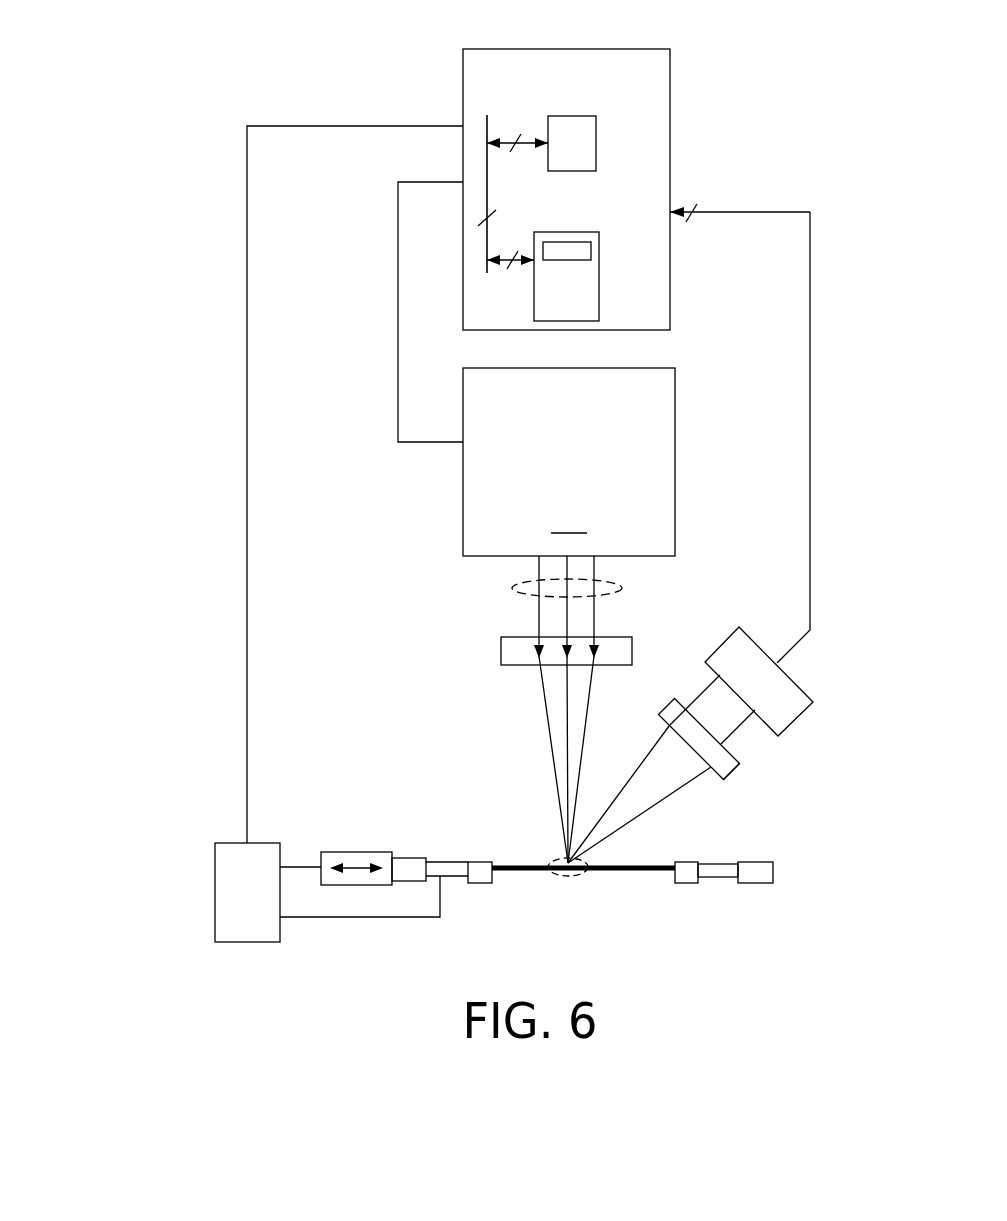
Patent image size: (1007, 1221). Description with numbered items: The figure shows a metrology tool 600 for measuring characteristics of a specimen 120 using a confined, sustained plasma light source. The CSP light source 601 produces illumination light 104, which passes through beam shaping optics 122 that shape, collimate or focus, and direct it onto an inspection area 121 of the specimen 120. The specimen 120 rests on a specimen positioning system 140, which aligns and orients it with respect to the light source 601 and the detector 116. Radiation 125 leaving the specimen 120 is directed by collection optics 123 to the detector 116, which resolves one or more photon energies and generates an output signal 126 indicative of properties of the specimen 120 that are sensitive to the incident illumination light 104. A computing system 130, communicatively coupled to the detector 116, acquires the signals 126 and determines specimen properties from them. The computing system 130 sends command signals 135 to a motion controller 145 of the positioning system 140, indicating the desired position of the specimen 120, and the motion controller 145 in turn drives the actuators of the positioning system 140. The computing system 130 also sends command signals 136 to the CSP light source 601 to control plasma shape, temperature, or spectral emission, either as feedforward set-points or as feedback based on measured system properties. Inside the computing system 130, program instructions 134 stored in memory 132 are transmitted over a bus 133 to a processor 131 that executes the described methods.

The metrology tool 600 is at (137, 115).
The computing system 130 is at (553, 74).
The processor 131 is at (596, 143).
The memory 132 is at (534, 307).
The bus 133 is at (487, 189).
The program instructions 134 is at (591, 251).
The command signals 135 is at (234, 208).
The command signals 136 is at (383, 208).
The output signal 126 is at (708, 199).
The CSP light source 601 is at (569, 462).
The illumination light 104 is at (512, 590).
The beam shaping optics 122 is at (501, 652).
The inspection area 121 is at (588, 860).
The specimen 120 is at (622, 874).
The radiation 125 is at (654, 779).
The collection optics 123 is at (733, 781).
The detector 116 is at (744, 693).
The specimen positioning system 140 is at (205, 957).
The motion controller 145 is at (230, 900).